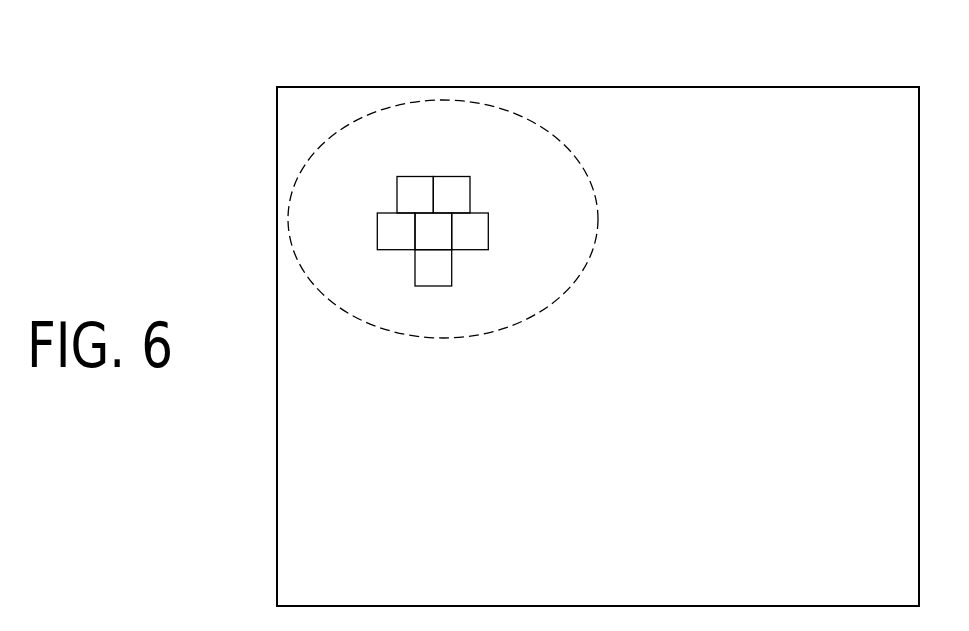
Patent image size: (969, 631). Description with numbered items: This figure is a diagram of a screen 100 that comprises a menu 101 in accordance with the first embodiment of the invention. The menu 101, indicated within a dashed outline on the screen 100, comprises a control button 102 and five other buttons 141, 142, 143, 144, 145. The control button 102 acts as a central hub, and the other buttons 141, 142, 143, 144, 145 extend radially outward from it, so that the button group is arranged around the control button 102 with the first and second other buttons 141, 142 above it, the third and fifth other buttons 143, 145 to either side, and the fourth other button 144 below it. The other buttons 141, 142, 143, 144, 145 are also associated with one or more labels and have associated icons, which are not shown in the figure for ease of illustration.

The screen 100 is at (802, 38).
The menu 101 is at (600, 217).
The control button 102 is at (430, 237).
The other button 141 is at (419, 175).
The other button 142 is at (446, 174).
The other button 143 is at (489, 242).
The other button 144 is at (453, 270).
The other button 145 is at (377, 237).